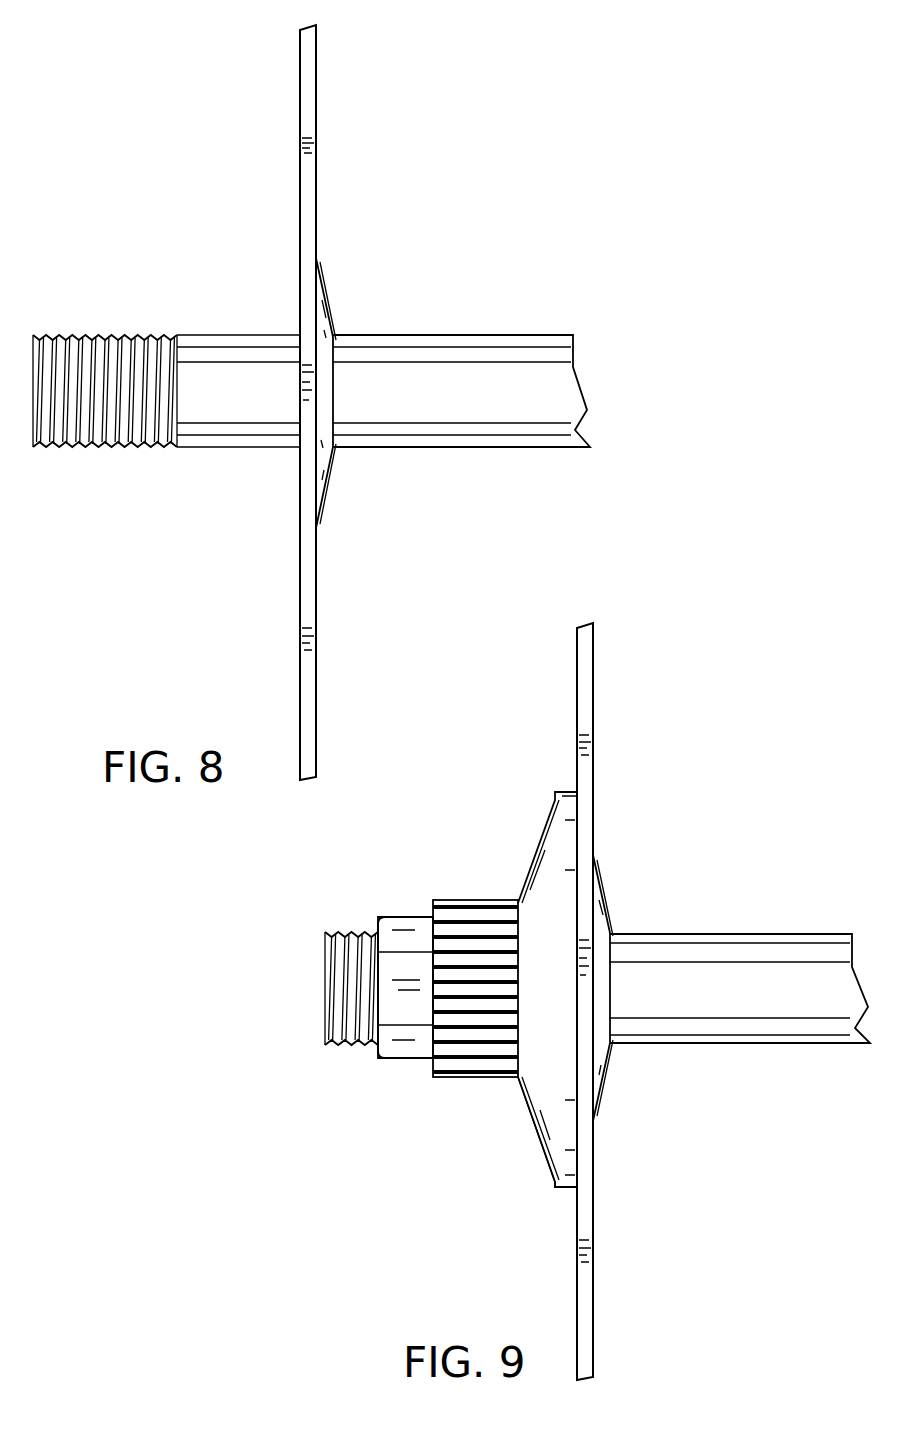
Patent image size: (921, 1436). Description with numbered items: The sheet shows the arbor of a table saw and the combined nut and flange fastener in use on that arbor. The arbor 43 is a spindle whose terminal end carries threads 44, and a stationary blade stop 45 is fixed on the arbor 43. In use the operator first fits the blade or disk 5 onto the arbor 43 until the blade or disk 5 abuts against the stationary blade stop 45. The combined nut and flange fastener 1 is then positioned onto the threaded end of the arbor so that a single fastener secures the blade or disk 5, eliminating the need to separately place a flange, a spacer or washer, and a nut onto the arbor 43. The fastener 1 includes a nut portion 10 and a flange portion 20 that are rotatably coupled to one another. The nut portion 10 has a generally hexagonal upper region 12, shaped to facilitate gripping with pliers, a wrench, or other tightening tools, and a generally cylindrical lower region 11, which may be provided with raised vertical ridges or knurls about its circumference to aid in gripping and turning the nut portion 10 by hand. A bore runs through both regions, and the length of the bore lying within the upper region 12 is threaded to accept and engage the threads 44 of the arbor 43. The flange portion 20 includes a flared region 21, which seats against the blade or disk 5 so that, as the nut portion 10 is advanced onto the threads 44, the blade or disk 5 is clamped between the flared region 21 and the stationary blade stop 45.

In FIG. 9, the combined nut and flange fastener 1 is at (225, 962).
In FIG. 8, the blade or disk 5 is at (300, 617).
In FIG. 9, the blade or disk 5 is at (577, 727).
In FIG. 9, the nut portion 10 is at (352, 1068).
In FIG. 9, the lower region 11 is at (475, 1078).
In FIG. 9, the upper region 12 is at (417, 1059).
In FIG. 9, the flange portion 20 is at (505, 847).
In FIG. 9, the flared region 21 is at (540, 1145).
In FIG. 8, the arbor 43 is at (480, 337).
In FIG. 9, the arbor 43 is at (705, 934).
In FIG. 8, the threads 44 is at (42, 334).
In FIG. 9, the threads 44 is at (325, 932).
In FIG. 8, the stationary blade stop 45 is at (328, 472).
In FIG. 9, the stationary blade stop 45 is at (607, 1072).